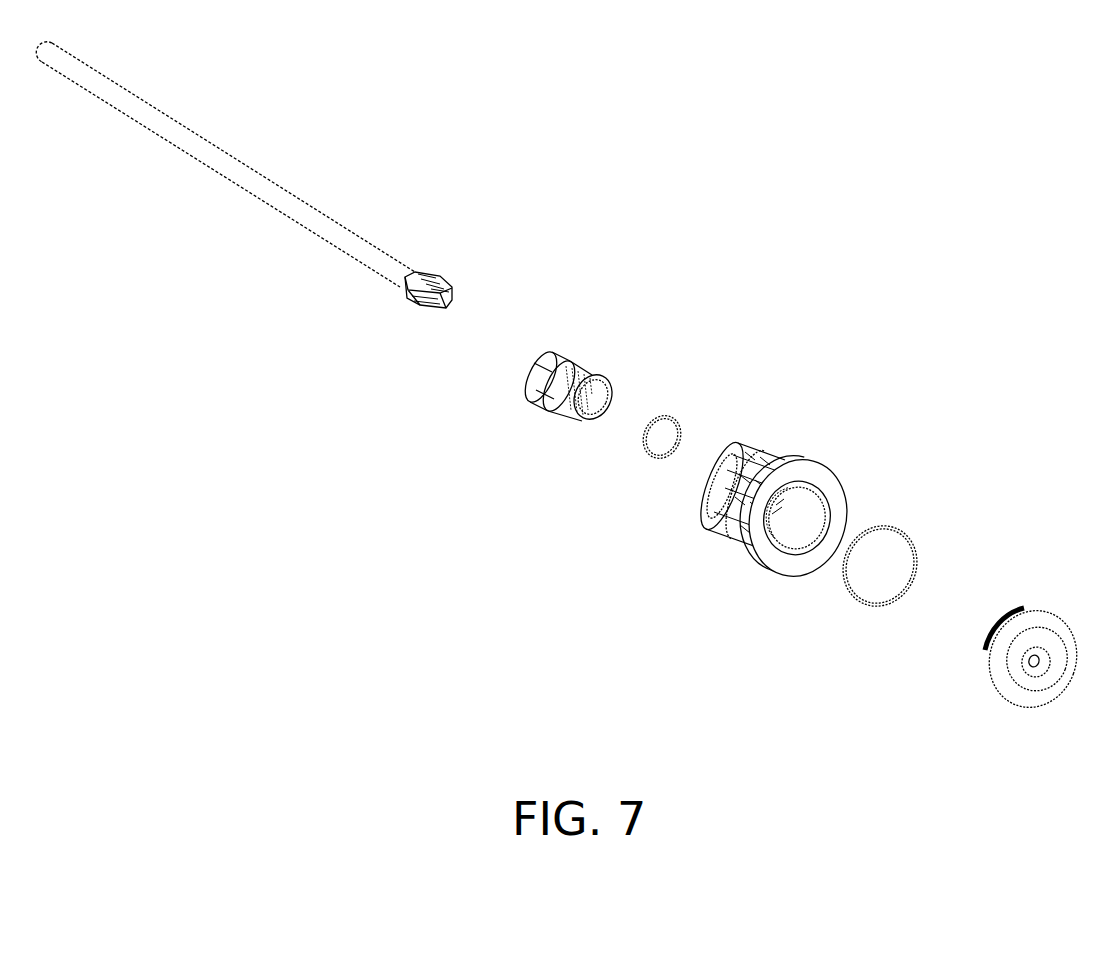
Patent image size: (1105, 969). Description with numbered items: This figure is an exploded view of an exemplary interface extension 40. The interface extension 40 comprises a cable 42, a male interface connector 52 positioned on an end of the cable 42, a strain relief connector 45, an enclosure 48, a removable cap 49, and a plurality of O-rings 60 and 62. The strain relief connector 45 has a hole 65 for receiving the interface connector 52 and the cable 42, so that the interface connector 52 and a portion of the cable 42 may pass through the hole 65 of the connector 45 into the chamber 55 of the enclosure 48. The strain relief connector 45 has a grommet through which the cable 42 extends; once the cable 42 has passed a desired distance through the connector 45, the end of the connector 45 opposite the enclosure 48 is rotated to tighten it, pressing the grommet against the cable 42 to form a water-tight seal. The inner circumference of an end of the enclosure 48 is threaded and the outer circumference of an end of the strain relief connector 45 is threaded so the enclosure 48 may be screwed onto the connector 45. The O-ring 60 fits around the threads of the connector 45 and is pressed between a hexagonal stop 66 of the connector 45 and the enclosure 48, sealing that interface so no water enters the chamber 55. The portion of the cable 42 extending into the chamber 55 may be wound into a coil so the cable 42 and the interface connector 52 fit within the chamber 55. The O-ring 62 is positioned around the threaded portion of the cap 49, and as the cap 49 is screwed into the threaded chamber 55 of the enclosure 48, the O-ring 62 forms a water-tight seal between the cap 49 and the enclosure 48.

The interface extension 40 is at (637, 160).
The cable 42 is at (275, 190).
The male interface connector 52 is at (435, 282).
The strain relief connector 45 is at (565, 357).
The hexagonal stop 66 is at (597, 371).
The hole 65 is at (600, 405).
The O-ring 60 is at (672, 418).
The enclosure 48 is at (762, 462).
The chamber 55 is at (800, 538).
The O-ring 62 is at (890, 527).
The removable cap 49 is at (1038, 610).